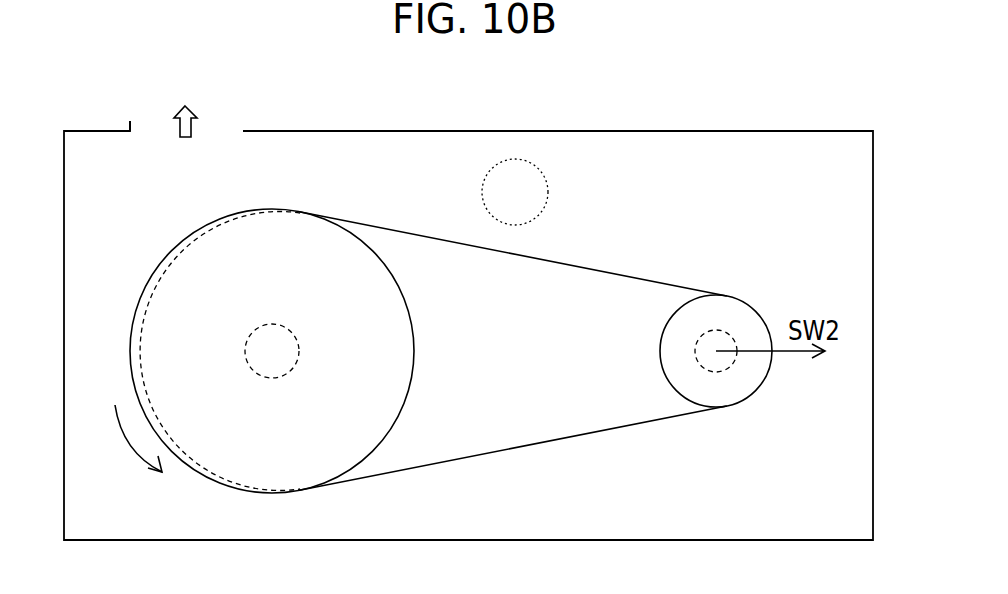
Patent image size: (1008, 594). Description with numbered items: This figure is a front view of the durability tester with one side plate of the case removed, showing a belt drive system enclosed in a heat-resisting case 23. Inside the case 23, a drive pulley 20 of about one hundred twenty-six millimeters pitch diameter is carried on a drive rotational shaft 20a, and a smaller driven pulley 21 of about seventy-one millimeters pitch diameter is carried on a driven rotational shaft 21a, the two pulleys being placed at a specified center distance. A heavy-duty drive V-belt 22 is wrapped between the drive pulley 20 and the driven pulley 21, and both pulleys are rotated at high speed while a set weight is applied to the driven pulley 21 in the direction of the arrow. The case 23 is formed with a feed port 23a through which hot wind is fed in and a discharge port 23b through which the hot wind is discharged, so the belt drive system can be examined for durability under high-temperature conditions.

The drive pulley 20 is at (212, 222).
The drive rotational shaft 20a is at (299, 352).
The driven pulley 21 is at (762, 315).
The driven rotational shaft 21a is at (734, 359).
The heavy-duty drive V-belt 22 is at (613, 276).
The heat-resisting case 23 is at (811, 131).
The feed port 23a is at (482, 188).
The discharge port 23b is at (245, 131).